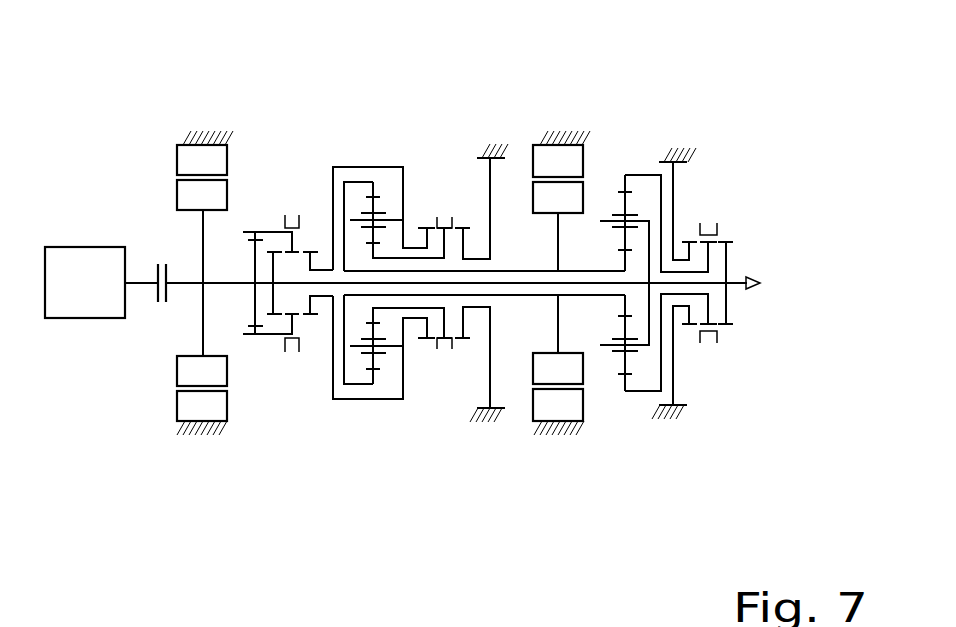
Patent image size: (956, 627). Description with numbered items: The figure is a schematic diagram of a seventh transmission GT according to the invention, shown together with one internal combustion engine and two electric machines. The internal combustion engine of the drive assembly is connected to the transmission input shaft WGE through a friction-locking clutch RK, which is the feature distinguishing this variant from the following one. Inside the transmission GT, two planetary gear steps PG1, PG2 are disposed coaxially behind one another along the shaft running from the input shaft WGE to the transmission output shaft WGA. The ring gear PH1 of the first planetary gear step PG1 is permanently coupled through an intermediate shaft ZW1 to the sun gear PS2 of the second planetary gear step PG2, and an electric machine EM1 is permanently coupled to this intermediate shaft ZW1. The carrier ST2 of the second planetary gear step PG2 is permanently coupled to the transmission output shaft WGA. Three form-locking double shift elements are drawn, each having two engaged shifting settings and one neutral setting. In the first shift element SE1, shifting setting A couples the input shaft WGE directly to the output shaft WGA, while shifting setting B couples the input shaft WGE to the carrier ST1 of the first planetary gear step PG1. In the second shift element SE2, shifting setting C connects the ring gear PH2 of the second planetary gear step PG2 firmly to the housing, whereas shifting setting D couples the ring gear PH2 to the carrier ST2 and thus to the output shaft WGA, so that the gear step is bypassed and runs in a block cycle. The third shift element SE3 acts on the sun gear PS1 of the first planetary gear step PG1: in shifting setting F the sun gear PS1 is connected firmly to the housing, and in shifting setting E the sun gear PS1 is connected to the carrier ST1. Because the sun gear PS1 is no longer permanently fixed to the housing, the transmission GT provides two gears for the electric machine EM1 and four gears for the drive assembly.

The friction-locking clutch RK is at (162, 304).
The transmission input shaft WGE is at (185, 280).
The first shift element SE1 is at (274, 376).
The first shifting setting A is at (271, 270).
The second shifting setting B is at (318, 251).
The transmission GT is at (304, 164).
The first planetary gear step PG1 is at (369, 293).
The ring gear of the first planetary gear step PH1 is at (352, 388).
The carrier of the first planetary gear step ST1 is at (392, 219).
The sun gear of the first planetary gear step PS1 is at (413, 309).
The third shift element SE3 is at (466, 223).
The second shifting setting E is at (437, 269).
The first shifting setting F is at (481, 283).
The intermediate shaft ZW1 is at (510, 297).
The electric machine EM1 is at (557, 114).
The second planetary gear step PG2 is at (640, 293).
The sun gear of the second planetary gear step PS2 is at (623, 306).
The carrier of the second planetary gear step ST2 is at (646, 350).
The ring gear of the second planetary gear step PH2 is at (640, 393).
The second shift element SE2 is at (701, 221).
The first shifting setting C is at (684, 283).
The second shifting setting D is at (727, 260).
The transmission output shaft WGA is at (735, 281).